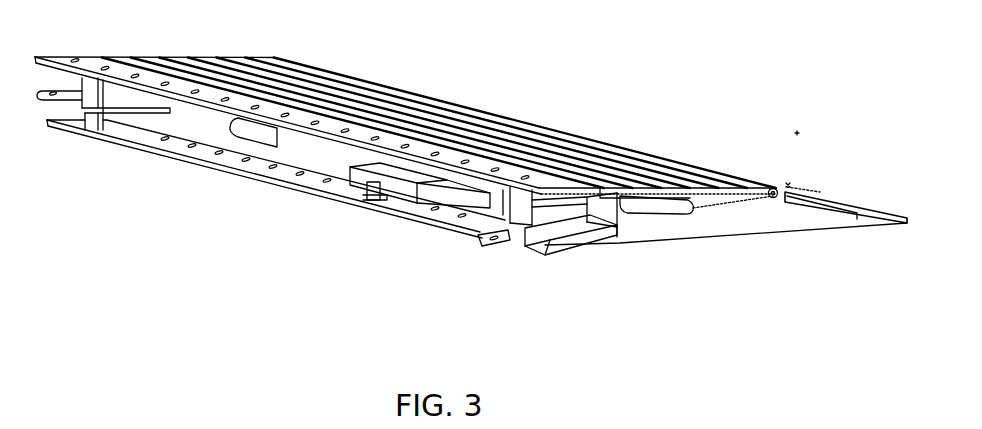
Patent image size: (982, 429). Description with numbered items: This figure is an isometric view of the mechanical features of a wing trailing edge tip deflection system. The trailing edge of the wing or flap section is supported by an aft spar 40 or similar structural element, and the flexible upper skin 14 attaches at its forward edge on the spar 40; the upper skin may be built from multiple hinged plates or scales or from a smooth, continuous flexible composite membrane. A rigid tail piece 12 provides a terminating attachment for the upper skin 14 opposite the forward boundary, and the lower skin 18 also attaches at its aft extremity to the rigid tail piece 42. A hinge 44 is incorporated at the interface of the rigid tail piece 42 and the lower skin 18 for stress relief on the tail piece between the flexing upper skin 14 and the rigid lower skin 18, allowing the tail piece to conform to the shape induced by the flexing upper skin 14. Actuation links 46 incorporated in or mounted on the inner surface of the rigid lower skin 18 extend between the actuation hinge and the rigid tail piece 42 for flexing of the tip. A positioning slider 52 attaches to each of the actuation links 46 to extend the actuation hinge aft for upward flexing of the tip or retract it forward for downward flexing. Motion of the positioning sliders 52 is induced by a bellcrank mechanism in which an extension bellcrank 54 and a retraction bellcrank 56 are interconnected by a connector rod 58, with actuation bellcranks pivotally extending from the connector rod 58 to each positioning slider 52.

The rigid tail piece 12 is at (690, 188).
The flexible upper skin 14 is at (468, 132).
The lower skin 18 is at (764, 228).
The aft spar 40 is at (302, 122).
The rigid tail piece 42 is at (871, 223).
The hinge 44 is at (777, 188).
The actuation links 46 is at (707, 197).
The positioning slider 52 is at (375, 194).
The extension bellcrank 54 is at (518, 230).
The retraction bellcrank 56 is at (70, 98).
The connector rod 58 is at (655, 203).